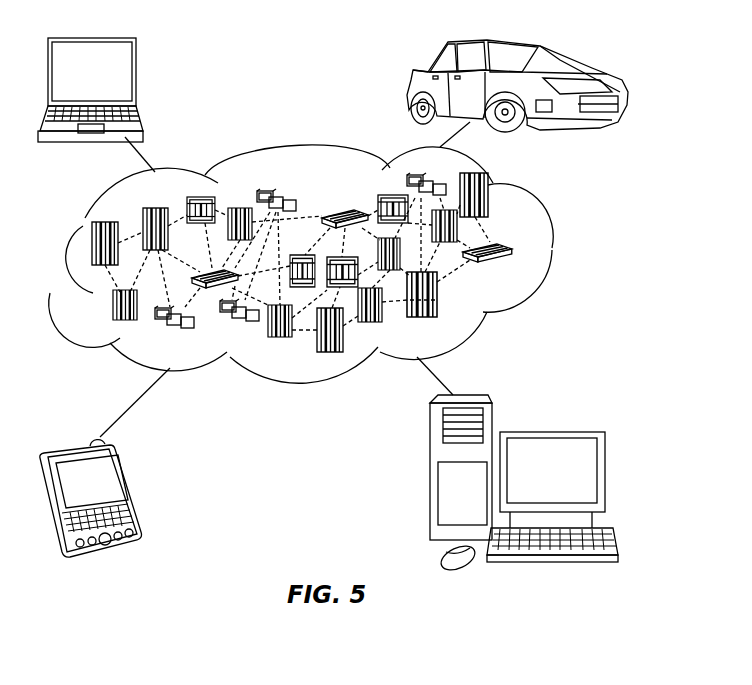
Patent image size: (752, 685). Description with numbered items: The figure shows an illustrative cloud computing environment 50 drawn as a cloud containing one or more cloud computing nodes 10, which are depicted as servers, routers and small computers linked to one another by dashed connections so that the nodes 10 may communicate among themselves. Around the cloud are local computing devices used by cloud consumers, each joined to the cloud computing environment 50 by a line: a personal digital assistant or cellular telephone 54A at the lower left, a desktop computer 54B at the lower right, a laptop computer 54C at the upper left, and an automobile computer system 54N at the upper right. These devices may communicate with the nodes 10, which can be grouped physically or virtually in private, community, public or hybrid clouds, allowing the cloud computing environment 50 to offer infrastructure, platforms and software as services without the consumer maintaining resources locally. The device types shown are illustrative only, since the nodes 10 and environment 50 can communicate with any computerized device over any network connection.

The cloud computing nodes 10 is at (333, 262).
The cloud computing environment 50 is at (553, 248).
The personal digital assistant (PDA) or cellular telephone 54A is at (130, 485).
The desktop computer 54B is at (548, 430).
The laptop computer 54C is at (137, 77).
The automobile computer system 54N is at (412, 90).